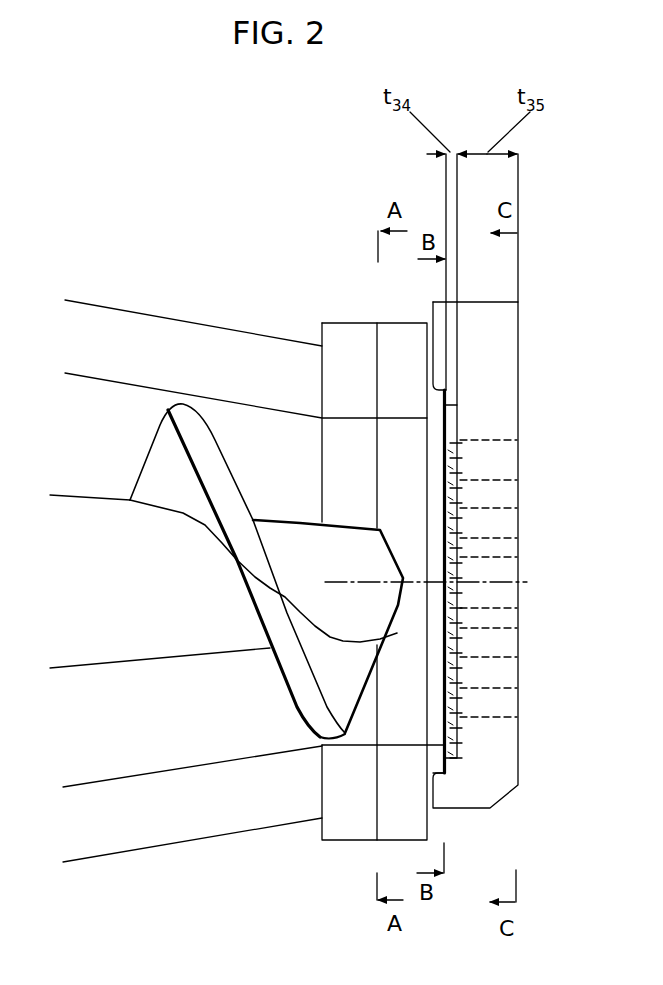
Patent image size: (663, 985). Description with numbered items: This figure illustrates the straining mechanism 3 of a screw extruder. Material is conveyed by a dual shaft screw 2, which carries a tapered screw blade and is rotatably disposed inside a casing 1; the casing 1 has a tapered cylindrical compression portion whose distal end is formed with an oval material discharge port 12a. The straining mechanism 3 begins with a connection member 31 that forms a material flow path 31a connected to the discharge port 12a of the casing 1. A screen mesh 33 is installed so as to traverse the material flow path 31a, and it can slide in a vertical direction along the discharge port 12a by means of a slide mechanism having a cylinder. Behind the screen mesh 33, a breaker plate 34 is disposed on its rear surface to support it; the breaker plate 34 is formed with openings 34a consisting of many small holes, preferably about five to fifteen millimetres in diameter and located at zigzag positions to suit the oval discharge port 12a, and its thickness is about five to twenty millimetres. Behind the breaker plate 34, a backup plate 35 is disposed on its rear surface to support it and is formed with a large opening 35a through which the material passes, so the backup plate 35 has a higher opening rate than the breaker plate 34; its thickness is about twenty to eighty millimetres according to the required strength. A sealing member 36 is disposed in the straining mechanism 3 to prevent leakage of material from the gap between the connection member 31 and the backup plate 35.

The casing 1 is at (93, 780).
The dual shaft screw 2 is at (148, 428).
The straining mechanism 3 is at (331, 563).
The material discharge port 12a is at (333, 745).
The connection member 31 is at (388, 367).
The material flow path 31a is at (390, 745).
The screen mesh 33 is at (442, 693).
The breaker plate 34 is at (448, 404).
The openings 34a is at (453, 468).
The backup plate 35 is at (455, 793).
The large opening 35a is at (490, 475).
The sealing member 36 is at (437, 764).